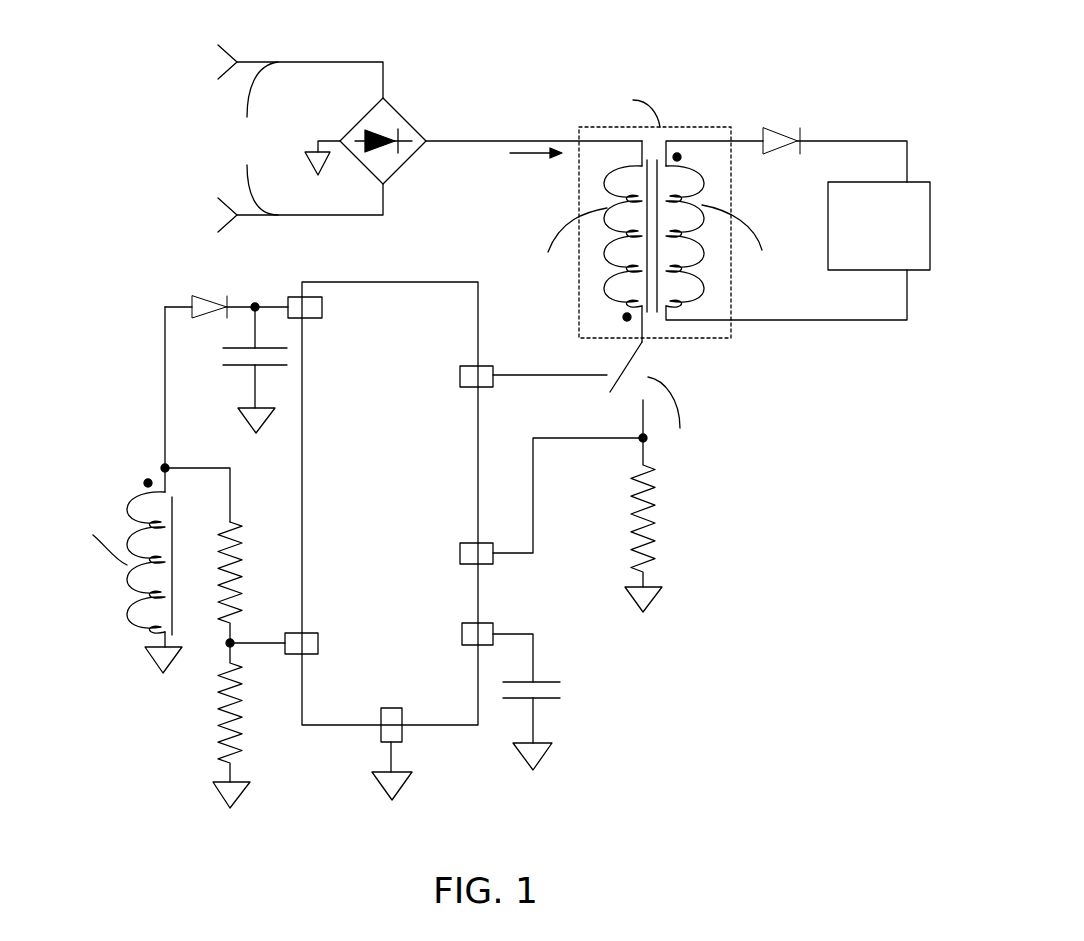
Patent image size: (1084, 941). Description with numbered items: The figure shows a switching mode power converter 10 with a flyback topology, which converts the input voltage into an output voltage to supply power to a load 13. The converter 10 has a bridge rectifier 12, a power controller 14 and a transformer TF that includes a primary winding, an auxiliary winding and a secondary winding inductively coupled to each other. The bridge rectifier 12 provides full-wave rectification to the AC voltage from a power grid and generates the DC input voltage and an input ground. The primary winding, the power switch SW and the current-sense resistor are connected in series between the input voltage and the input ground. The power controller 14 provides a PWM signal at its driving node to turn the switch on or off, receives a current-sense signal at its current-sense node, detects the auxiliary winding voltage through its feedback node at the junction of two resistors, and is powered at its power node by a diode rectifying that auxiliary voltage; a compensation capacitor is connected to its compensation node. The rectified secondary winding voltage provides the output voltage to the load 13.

The switching mode power converter 10 is at (566, 52).
The bridge rectifier 12 is at (396, 106).
The load 13 is at (867, 252).
The power controller 14 is at (399, 476).